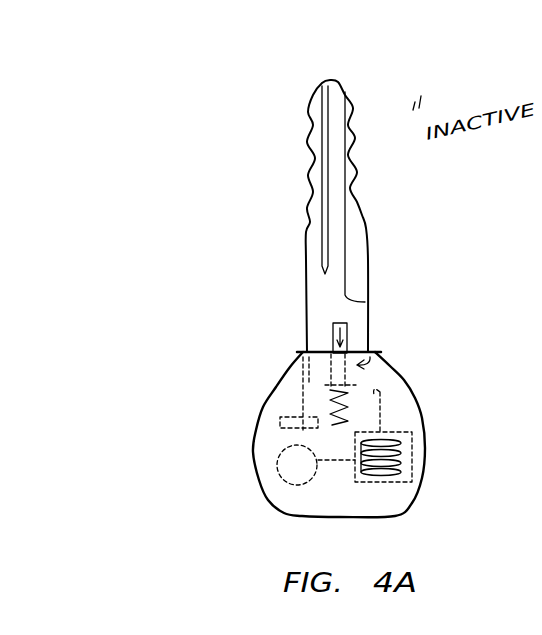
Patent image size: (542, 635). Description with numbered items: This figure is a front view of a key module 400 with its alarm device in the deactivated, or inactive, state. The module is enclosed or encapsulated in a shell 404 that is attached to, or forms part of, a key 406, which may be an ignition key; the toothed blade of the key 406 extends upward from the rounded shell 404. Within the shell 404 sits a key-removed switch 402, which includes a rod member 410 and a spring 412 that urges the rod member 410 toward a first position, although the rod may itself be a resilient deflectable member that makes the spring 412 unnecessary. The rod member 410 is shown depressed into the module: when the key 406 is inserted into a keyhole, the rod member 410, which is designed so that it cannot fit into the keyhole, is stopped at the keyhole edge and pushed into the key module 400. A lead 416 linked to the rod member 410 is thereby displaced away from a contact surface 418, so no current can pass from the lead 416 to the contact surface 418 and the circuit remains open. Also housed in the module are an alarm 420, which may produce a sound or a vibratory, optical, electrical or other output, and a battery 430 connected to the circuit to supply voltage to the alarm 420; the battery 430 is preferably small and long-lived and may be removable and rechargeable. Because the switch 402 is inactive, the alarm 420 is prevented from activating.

The key module 400 is at (206, 331).
The key-removed switch 402 is at (430, 341).
The shell 404 is at (237, 434).
The key 406 is at (241, 216).
The rod member 410 is at (252, 318).
The spring 412 is at (441, 410).
The lead 416 is at (417, 389).
The contact surface 418 is at (202, 393).
The alarm 420 is at (429, 478).
The battery 430 is at (206, 500).